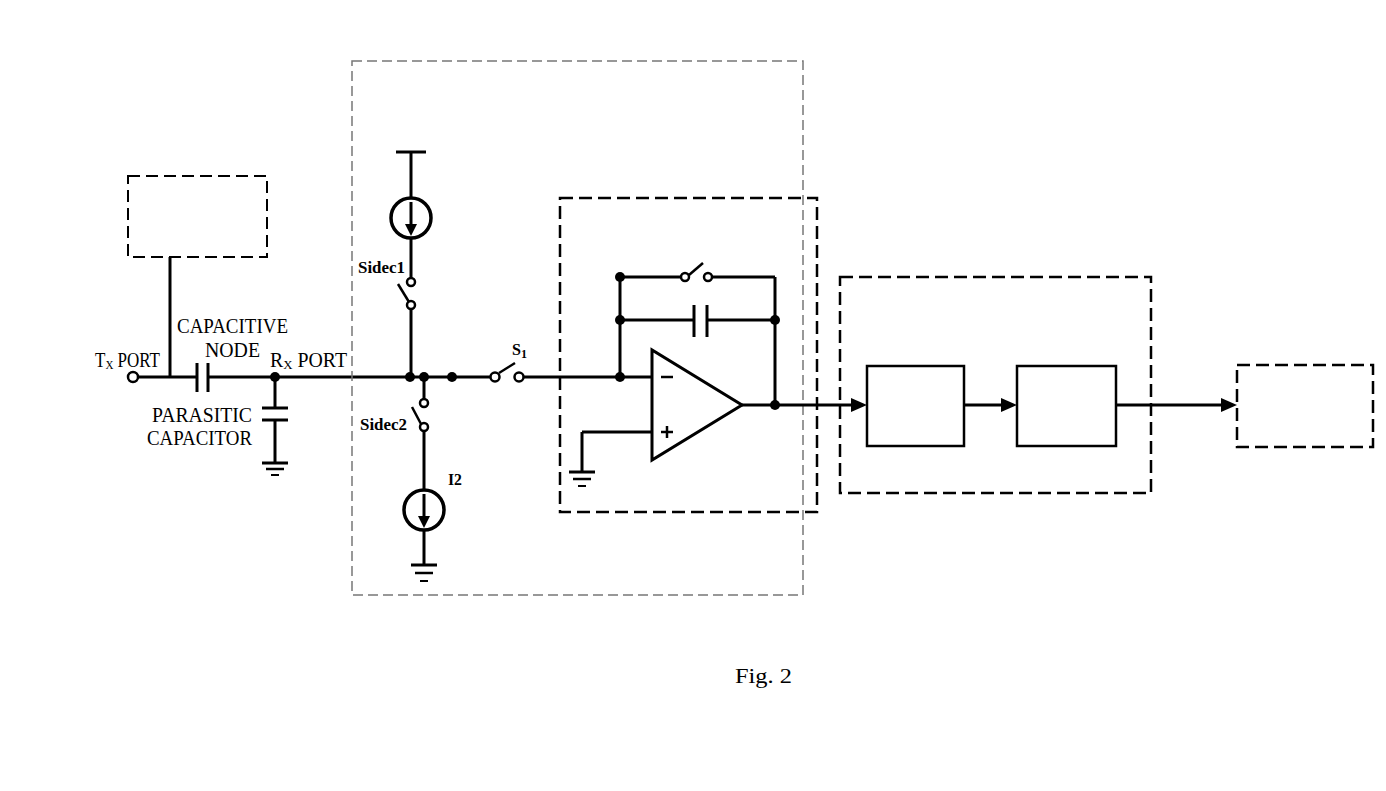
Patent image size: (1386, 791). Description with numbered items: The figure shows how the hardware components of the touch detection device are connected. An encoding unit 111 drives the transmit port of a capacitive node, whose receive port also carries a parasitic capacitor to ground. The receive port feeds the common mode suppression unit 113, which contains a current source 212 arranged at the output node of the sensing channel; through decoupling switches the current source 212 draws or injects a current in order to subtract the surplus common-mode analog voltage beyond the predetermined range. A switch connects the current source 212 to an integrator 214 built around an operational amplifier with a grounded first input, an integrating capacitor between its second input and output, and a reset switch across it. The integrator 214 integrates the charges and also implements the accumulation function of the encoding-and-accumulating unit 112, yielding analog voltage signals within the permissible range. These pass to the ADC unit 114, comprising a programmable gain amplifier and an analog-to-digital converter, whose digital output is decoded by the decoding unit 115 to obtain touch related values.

The encoding unit 111 is at (190, 175).
The encoding-and-accumulating unit 112 is at (823, 192).
The common mode suppression unit 113 is at (610, 62).
The ADC unit 114 is at (967, 277).
The decoding unit 115 is at (1285, 365).
The current source 212 is at (442, 223).
The integrator 214 is at (655, 210).